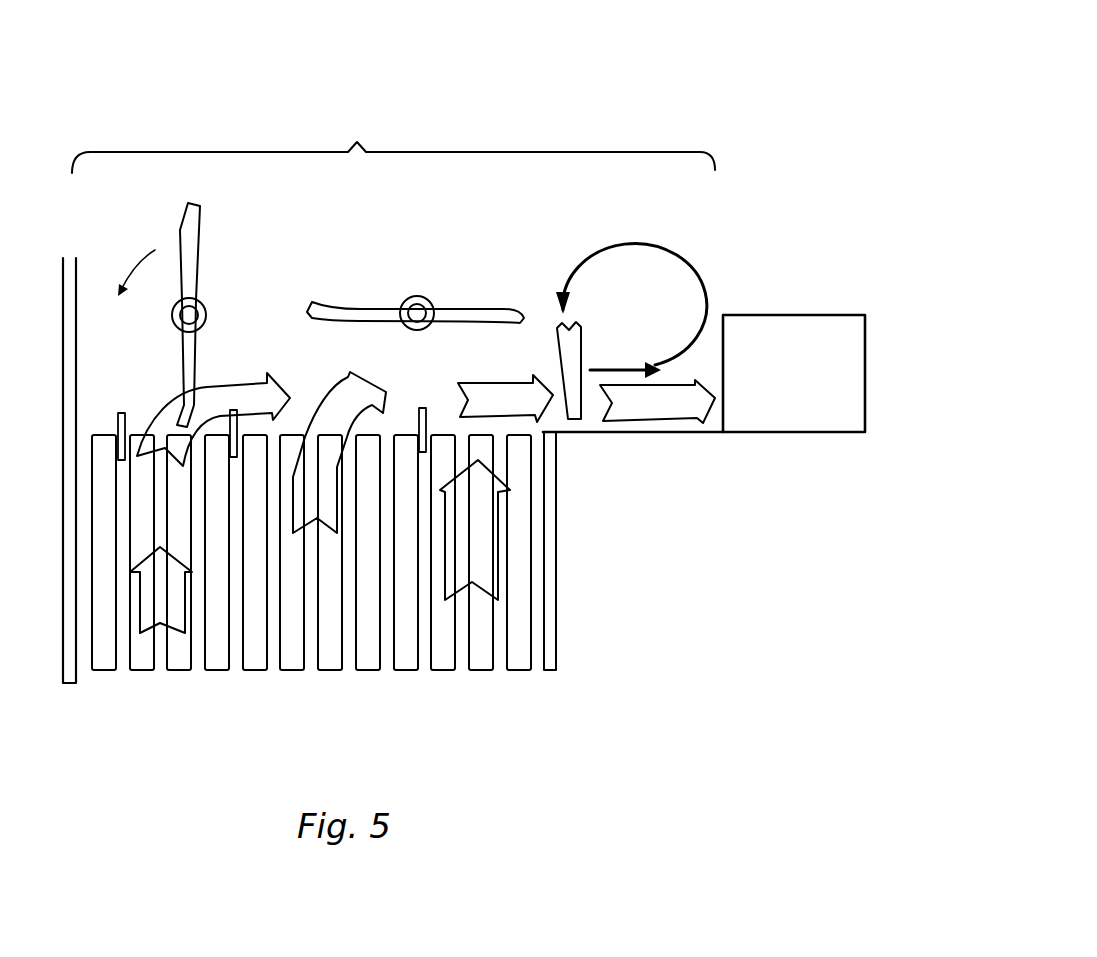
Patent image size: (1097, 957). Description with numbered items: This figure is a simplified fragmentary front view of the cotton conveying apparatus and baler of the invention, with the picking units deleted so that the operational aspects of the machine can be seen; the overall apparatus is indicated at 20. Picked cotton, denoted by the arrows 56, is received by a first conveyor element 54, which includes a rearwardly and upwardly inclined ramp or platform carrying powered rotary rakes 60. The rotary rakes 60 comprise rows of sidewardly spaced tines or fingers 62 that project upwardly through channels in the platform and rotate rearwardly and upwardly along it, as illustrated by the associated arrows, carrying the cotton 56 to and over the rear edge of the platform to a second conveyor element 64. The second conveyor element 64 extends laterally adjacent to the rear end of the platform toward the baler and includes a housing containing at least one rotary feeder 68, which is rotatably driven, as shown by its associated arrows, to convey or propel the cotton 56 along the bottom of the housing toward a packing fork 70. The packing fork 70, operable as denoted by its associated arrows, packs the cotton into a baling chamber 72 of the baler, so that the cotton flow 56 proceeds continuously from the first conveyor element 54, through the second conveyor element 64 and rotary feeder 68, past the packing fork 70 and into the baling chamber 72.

The dryer appliance 20 is at (656, 104).
The first conveyor element 54 is at (558, 567).
The picked cotton 56 is at (291, 376).
The powered rotary rakes 60 is at (254, 367).
The tines or fingers 62 is at (117, 420).
The second conveyor element 64 is at (393, 143).
The rotary feeder 68 is at (203, 211).
The packing fork 70 is at (557, 330).
The baling chamber 72 is at (783, 335).